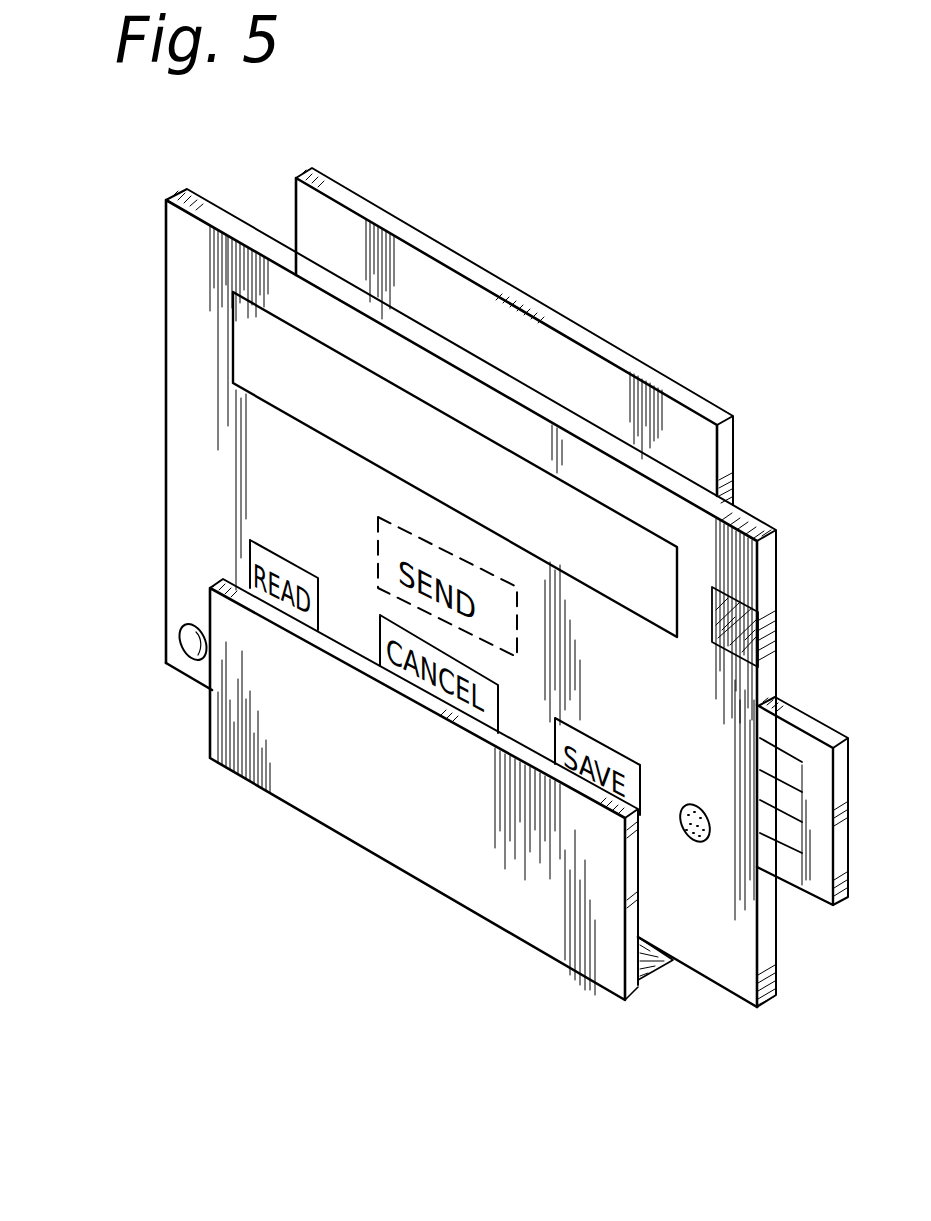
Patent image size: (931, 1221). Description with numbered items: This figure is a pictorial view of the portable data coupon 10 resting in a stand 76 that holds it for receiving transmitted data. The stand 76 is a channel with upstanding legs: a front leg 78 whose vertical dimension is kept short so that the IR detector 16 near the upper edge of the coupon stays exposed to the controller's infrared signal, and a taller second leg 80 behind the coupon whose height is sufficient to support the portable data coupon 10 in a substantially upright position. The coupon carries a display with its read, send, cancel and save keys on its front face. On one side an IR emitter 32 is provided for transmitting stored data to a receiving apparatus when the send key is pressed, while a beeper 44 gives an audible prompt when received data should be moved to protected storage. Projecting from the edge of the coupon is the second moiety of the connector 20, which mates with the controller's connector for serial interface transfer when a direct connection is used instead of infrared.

The portable data coupon 10 is at (120, 242).
The IR detector 16 is at (742, 585).
The second moiety of the connector 20 is at (833, 905).
The IR emitter 32 is at (182, 648).
The beeper 44 is at (698, 843).
The stand 76 is at (568, 318).
The front leg 78 is at (630, 925).
The second leg 80 is at (688, 386).